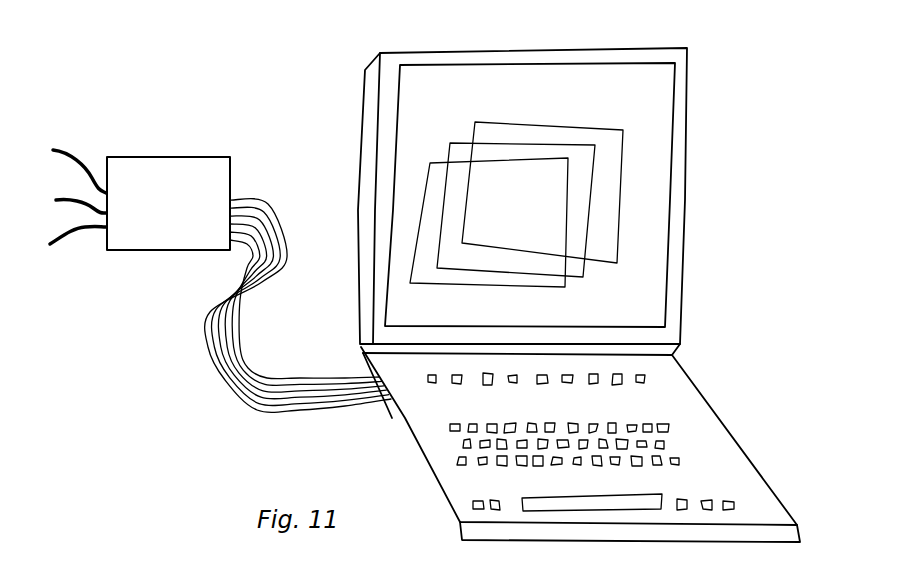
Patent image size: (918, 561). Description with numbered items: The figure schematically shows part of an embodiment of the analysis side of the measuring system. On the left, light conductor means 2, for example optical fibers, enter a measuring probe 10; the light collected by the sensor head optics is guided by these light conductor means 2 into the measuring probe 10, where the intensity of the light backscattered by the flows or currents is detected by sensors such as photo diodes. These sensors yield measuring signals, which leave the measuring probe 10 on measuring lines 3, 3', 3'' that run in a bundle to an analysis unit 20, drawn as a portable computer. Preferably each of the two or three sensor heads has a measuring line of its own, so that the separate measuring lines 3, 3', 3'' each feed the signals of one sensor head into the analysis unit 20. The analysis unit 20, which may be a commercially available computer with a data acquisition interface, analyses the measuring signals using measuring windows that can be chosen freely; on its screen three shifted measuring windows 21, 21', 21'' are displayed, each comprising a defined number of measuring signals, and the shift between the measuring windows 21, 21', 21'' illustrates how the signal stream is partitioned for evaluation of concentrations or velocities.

The measuring probe 10 is at (201, 168).
The light conductor means 2 is at (66, 242).
The measuring line 3 is at (298, 330).
The measuring line 3' is at (302, 339).
The measuring line 3'' is at (305, 308).
The analysis unit 20 is at (717, 259).
The measuring window 21 is at (489, 186).
The measuring window 21' is at (519, 178).
The measuring window 21'' is at (559, 172).